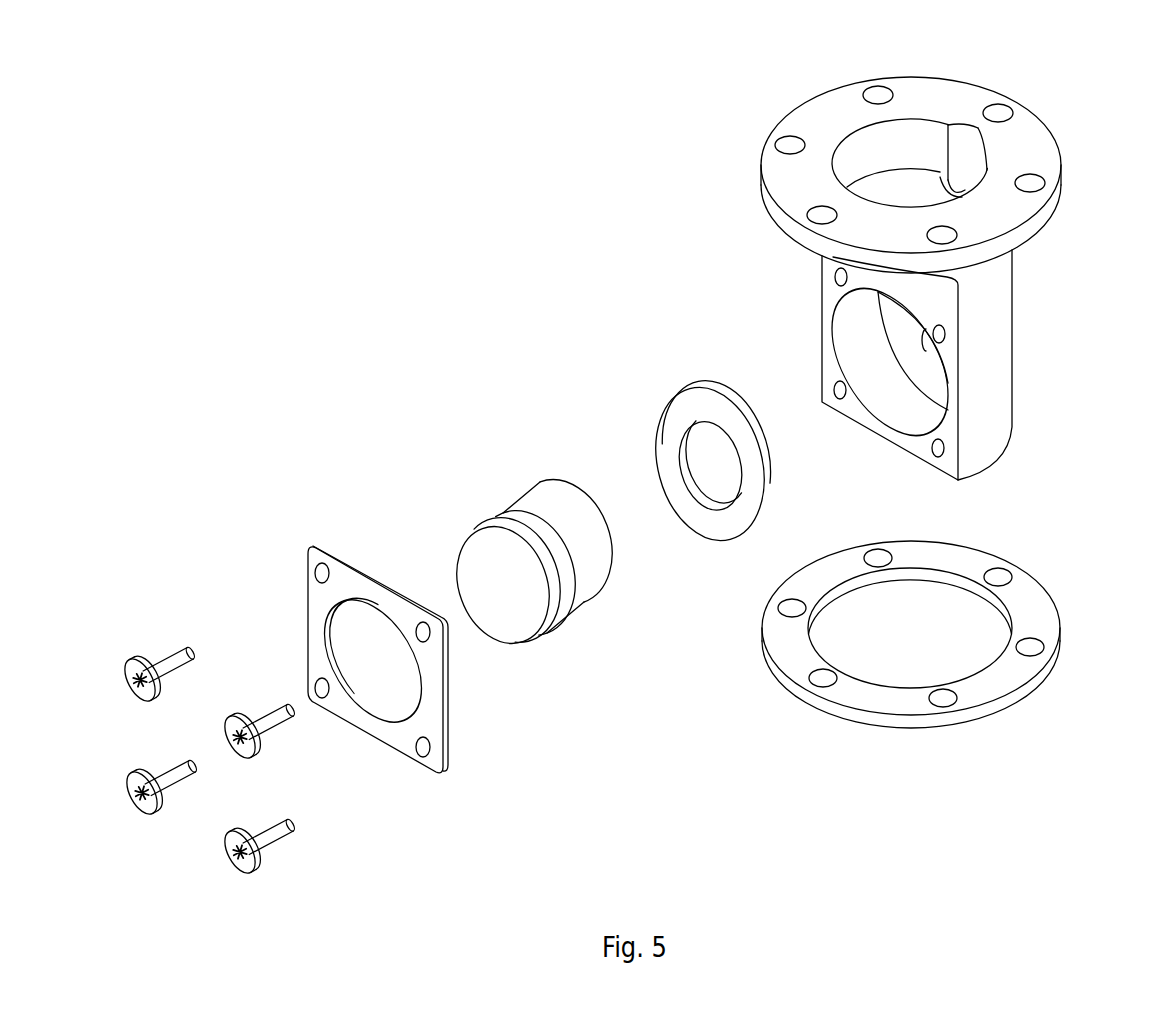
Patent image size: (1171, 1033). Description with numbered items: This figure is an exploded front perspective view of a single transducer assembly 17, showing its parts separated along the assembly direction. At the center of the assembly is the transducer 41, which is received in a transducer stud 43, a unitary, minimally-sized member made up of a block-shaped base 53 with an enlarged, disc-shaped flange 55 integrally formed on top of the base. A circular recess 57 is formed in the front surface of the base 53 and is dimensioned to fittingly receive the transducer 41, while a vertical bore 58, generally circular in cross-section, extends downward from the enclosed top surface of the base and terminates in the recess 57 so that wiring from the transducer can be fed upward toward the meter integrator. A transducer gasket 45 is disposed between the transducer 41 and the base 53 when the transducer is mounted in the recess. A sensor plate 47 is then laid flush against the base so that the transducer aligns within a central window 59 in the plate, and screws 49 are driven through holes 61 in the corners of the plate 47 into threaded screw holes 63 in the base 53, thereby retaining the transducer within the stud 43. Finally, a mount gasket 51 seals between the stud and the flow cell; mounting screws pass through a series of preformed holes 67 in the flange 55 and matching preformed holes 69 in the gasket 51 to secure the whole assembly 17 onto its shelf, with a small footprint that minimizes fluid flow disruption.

The transducer assembly 17 is at (633, 471).
The transducer 41 is at (513, 493).
The transducer stud 43 is at (943, 407).
The transducer gasket 45 is at (662, 407).
The sensor plate 47 is at (359, 610).
The screws 49 is at (262, 722).
The mount gasket 51 is at (942, 658).
The base 53 is at (949, 372).
The flange 55 is at (943, 156).
The circular recess 57 is at (895, 403).
The vertical bore 58 is at (959, 197).
The central window 59 is at (398, 681).
The hole 61 is at (320, 575).
The screw holes 63 is at (842, 395).
The preformed holes 67 is at (785, 147).
The preformed holes 69 is at (823, 686).